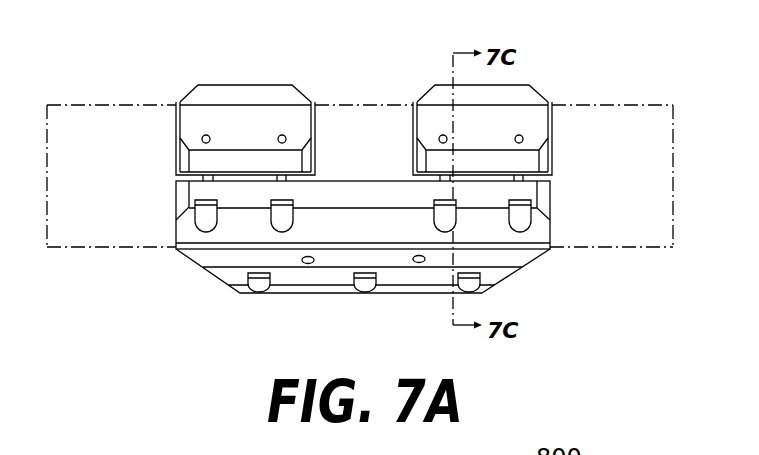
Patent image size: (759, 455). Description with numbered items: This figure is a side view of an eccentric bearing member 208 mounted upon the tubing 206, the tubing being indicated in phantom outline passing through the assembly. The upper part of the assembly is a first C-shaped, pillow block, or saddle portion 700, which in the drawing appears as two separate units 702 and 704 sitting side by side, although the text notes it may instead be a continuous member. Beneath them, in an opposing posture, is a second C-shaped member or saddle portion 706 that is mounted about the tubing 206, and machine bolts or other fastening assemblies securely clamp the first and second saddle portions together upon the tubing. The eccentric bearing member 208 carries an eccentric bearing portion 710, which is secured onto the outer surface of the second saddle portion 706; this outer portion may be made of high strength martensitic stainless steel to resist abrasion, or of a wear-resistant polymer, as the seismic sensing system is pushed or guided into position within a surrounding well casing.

The tubing 206 is at (663, 103).
The eccentric bearing member 208 is at (359, 273).
The first C-shaped saddle portion 700 is at (374, 196).
The separate unit of first saddle portion 702 is at (217, 85).
The separate unit of first saddle portion 704 is at (553, 102).
The second C-shaped saddle portion 706 is at (545, 258).
The eccentric bearing portion 710 is at (273, 293).